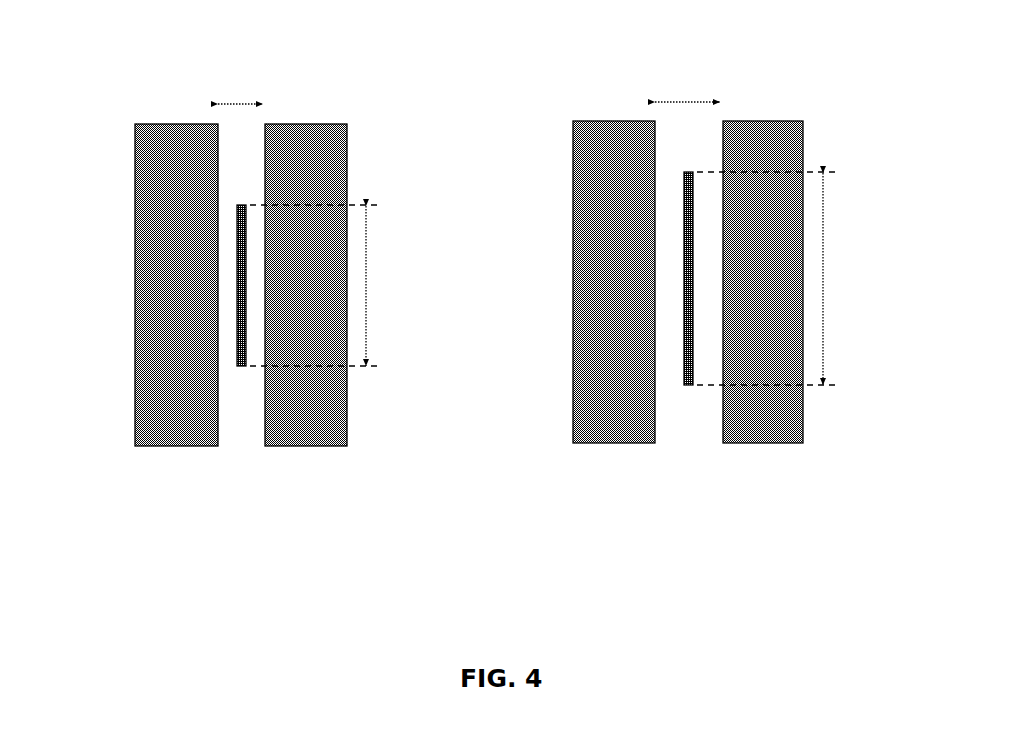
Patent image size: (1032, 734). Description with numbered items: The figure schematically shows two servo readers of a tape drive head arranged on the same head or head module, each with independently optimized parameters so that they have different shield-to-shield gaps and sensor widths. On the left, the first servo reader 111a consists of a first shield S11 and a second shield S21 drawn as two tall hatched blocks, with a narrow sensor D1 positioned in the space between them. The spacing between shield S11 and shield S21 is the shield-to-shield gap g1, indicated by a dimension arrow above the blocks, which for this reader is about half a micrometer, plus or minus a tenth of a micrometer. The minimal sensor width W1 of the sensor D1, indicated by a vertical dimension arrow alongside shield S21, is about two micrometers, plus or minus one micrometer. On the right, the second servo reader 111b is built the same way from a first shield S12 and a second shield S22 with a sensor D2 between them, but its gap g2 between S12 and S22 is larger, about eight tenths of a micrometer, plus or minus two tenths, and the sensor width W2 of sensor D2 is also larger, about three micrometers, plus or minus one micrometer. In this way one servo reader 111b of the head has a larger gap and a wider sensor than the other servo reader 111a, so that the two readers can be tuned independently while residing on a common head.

The servo reader 111a is at (325, 108).
The servo reader 111b is at (771, 117).
The shield S11 is at (160, 422).
The shield S21 is at (300, 423).
The sensor D1 is at (243, 367).
The shield S12 is at (608, 430).
The shield S22 is at (748, 428).
The sensor D2 is at (690, 386).
The shield-to-shield gap g1 is at (240, 94).
The shield-to-shield gap g2 is at (687, 92).
The sensor width W1 is at (326, 285).
The sensor width W2 is at (775, 278).